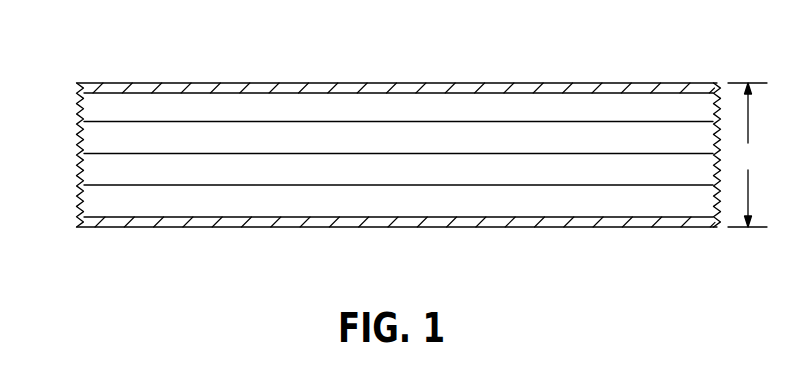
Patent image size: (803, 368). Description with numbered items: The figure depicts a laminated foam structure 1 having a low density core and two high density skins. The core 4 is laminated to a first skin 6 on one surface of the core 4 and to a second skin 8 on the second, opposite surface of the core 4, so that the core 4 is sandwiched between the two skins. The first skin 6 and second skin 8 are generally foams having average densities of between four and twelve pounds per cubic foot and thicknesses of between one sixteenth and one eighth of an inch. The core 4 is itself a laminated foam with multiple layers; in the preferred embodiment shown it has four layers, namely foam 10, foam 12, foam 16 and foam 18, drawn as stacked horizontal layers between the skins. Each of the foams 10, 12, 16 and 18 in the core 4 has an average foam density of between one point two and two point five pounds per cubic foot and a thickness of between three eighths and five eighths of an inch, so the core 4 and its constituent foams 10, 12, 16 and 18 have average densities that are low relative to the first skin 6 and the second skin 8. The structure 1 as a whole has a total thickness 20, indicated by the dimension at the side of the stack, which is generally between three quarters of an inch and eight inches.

The laminated foam structure 1 is at (180, 48).
The core 4 is at (67, 93).
The first skin 6 is at (379, 85).
The second skin 8 is at (345, 222).
The foam 10 is at (435, 207).
The foam 12 is at (517, 175).
The foam 16 is at (585, 137).
The foam 18 is at (522, 108).
The total thickness 20 is at (747, 155).